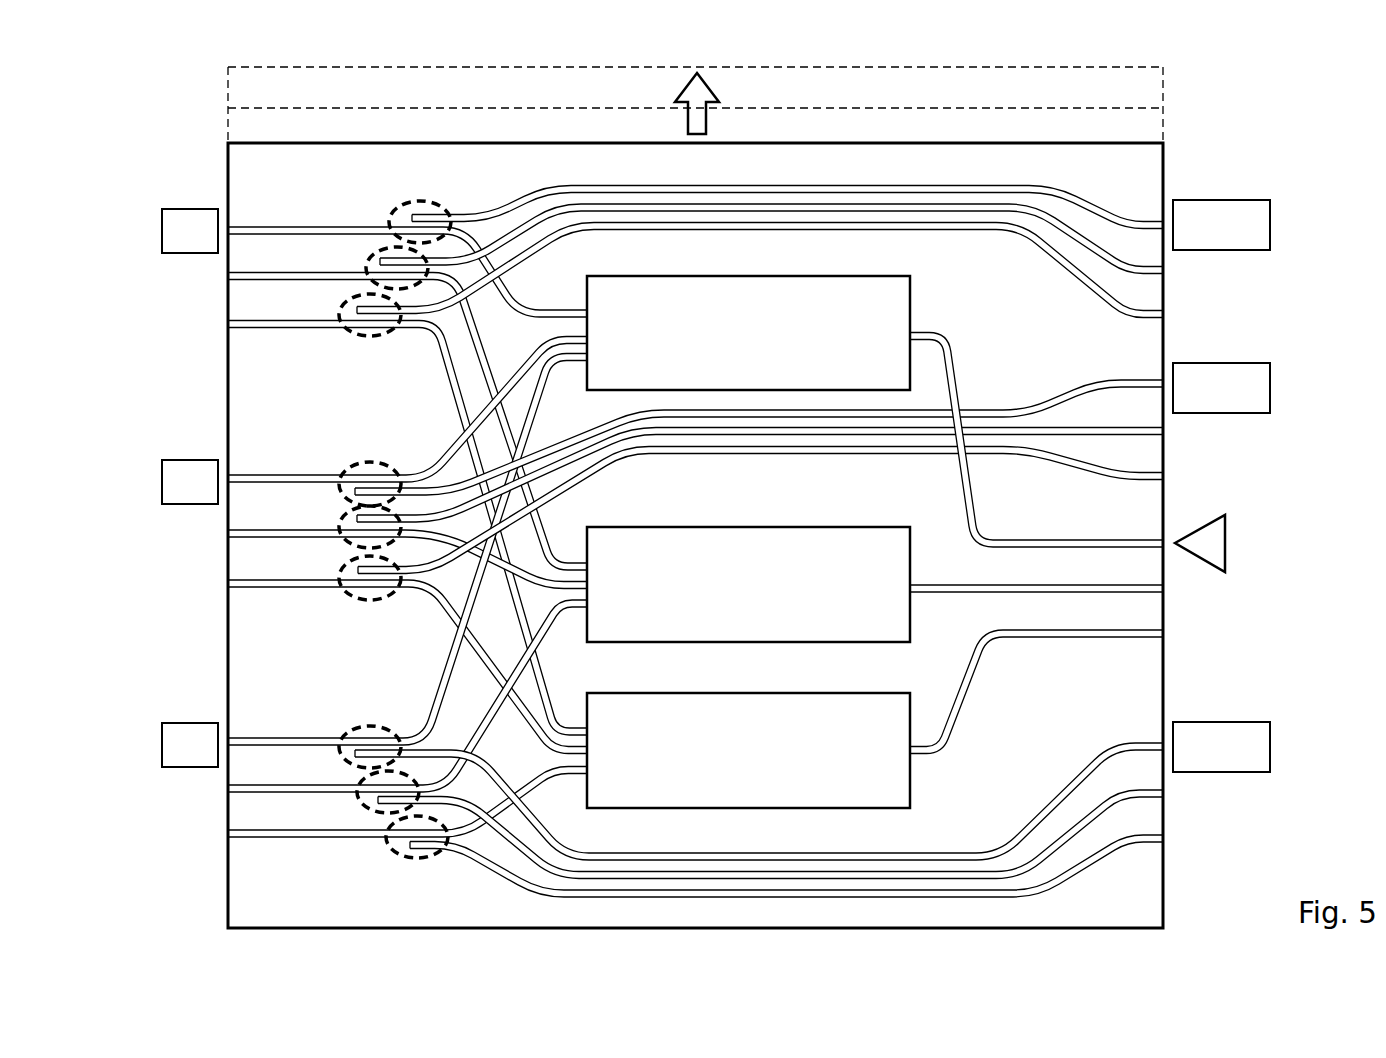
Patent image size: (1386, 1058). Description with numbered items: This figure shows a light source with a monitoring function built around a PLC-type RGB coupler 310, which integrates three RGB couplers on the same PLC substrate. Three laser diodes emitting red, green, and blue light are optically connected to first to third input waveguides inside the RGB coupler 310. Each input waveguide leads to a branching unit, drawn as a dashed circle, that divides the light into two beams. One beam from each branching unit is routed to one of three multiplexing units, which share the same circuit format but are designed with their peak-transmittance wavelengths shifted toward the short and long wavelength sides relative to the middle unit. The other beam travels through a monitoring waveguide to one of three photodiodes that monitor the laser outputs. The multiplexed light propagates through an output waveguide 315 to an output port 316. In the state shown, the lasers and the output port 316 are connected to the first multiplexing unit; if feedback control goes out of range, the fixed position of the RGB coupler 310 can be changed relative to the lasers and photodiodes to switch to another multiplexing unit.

The RGB coupler 310 is at (1165, 153).
The output waveguide 315 is at (1013, 630).
The output port 316 is at (1225, 540).